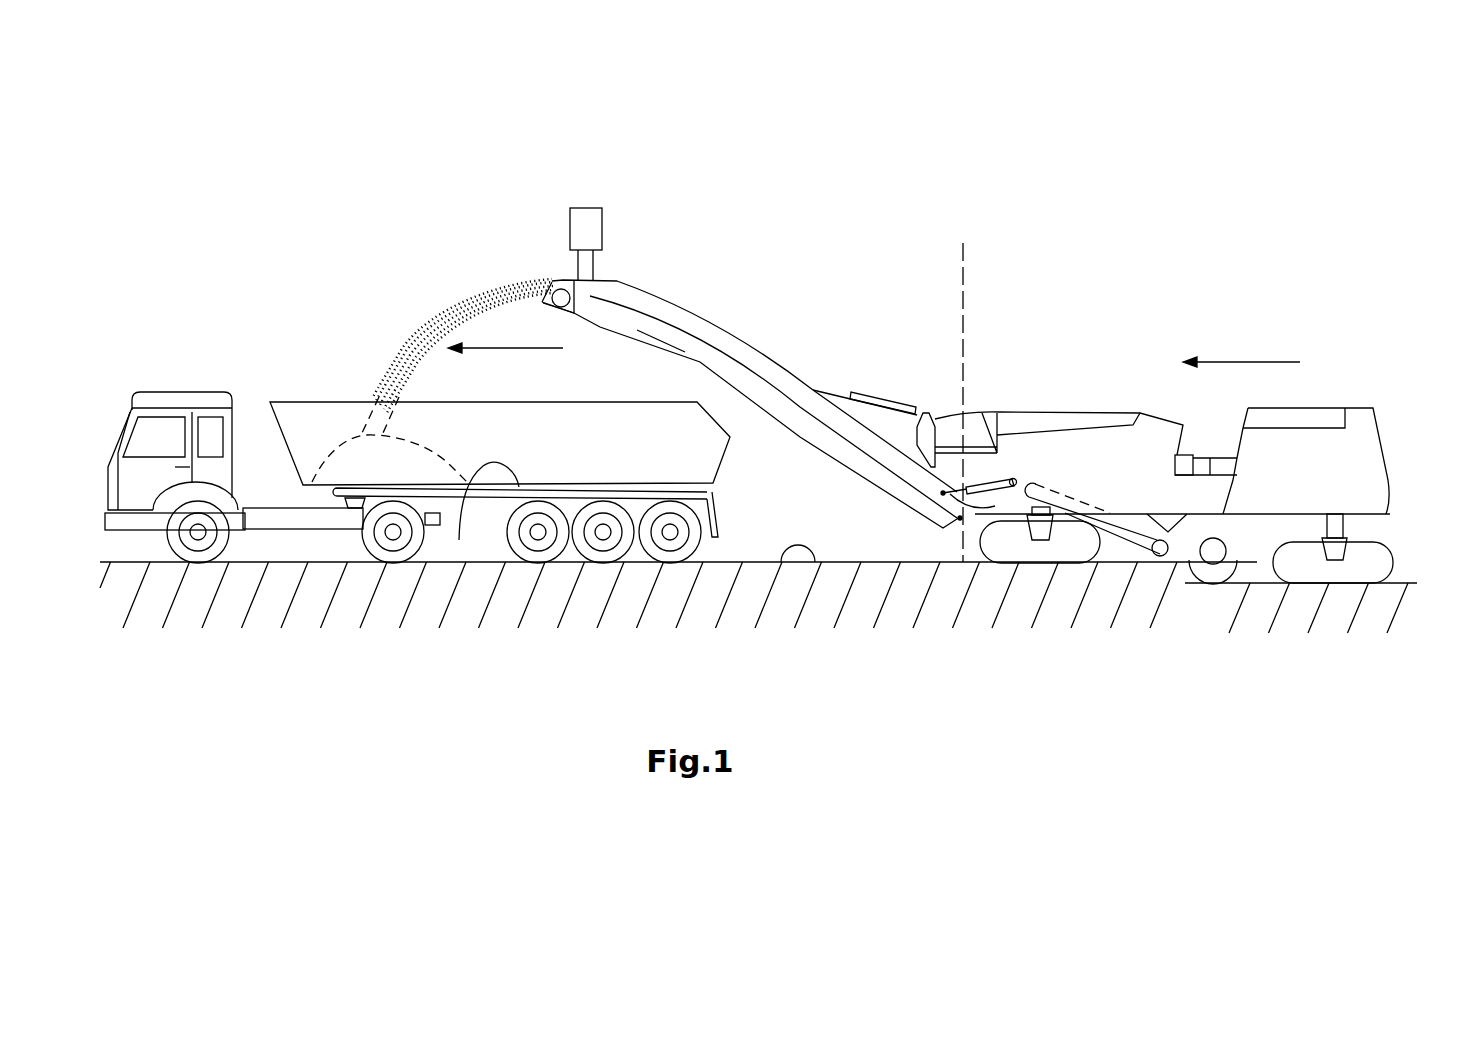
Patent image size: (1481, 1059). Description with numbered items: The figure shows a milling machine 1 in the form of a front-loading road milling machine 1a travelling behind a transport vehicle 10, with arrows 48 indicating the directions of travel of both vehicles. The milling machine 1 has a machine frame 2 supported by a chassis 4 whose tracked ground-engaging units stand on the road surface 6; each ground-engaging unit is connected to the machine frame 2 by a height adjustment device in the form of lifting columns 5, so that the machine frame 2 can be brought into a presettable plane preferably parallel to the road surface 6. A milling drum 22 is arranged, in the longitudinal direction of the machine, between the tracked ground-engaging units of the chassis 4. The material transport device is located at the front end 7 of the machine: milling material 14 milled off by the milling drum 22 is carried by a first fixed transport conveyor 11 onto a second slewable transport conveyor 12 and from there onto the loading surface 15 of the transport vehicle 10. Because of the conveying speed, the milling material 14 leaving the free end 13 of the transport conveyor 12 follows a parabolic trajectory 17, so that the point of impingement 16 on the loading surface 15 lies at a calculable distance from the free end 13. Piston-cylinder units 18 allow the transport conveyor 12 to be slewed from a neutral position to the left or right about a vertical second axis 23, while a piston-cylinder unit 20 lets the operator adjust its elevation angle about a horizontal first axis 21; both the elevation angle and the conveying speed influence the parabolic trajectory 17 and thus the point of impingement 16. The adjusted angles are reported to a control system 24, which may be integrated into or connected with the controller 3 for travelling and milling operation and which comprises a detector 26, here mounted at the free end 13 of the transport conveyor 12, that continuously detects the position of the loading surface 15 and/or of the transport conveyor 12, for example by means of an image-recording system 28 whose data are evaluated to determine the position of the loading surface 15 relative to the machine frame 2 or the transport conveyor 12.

The milling machine 1 is at (1115, 473).
The front-loading road milling machine 1a is at (1094, 476).
The machine frame 2 is at (1048, 402).
The controller 3 is at (1296, 416).
The control system 24 is at (1185, 467).
The chassis 4 is at (1414, 551).
The lifting columns 5 is at (1040, 510).
The road surface 6 is at (815, 562).
The front end 7 is at (951, 378).
The transport vehicle 10 is at (313, 358).
The first fixed transport conveyor 11 is at (1118, 528).
The second slewable transport conveyor 12 is at (720, 336).
The free end of the transport conveyor 13 is at (545, 252).
The milling material 14 is at (358, 477).
The loading surface 15 is at (459, 540).
The point of impingement 16 is at (348, 482).
The parabolic trajectory 17 is at (403, 350).
The piston-cylinder units 18 is at (982, 413).
The piston-cylinder unit 20 is at (882, 396).
The horizontal first axis 21 is at (960, 520).
The milling drum 22 is at (1210, 570).
The vertical second axis 23 is at (963, 283).
The detector 26 is at (632, 213).
The image-recording system 28 is at (585, 222).
The arrows 48 is at (518, 348).